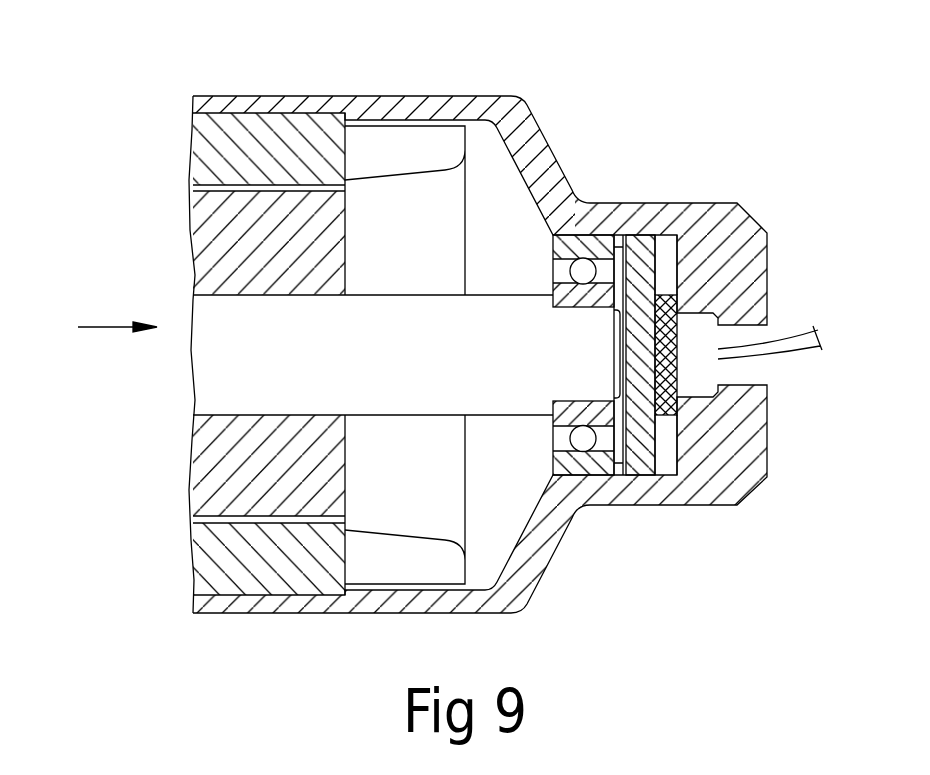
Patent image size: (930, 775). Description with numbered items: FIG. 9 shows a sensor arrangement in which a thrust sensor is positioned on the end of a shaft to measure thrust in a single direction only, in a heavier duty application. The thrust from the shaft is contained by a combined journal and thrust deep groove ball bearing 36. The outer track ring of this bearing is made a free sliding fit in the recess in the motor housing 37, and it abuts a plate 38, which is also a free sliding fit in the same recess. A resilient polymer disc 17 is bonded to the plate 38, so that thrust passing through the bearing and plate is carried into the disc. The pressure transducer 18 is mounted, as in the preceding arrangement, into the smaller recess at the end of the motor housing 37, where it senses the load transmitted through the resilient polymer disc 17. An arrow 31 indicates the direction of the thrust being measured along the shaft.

The resilient polymer disc 17 is at (667, 323).
The pressure transducer 18 is at (703, 323).
The flow direction arrow 31 is at (105, 322).
The combined journal and thrust deep groove ball bearing 36 is at (563, 248).
The motor housing 37 is at (614, 232).
The plate 38 is at (643, 252).